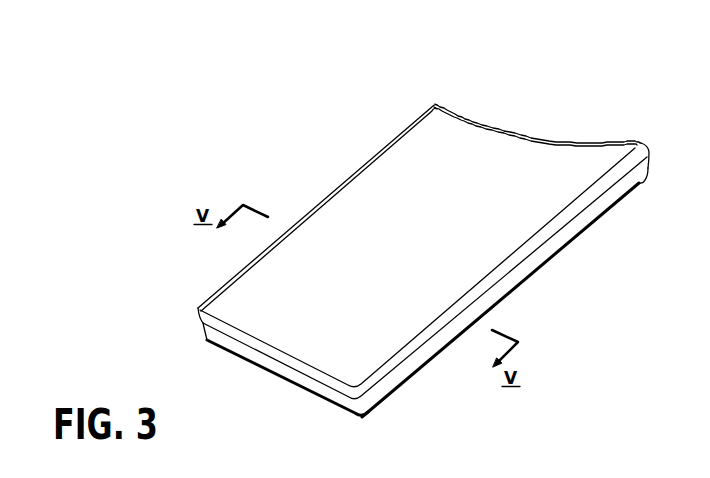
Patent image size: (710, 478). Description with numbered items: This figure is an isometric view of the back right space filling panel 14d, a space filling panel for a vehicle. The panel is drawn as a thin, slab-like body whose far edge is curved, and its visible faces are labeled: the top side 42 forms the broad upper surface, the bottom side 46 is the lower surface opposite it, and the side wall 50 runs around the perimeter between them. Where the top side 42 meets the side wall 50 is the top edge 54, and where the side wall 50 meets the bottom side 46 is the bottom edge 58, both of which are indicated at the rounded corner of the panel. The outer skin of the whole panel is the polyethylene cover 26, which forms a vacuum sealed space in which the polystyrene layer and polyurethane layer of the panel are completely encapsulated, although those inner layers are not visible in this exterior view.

The top side 42 is at (397, 177).
The back right space filling panel 14d is at (528, 122).
The top edge 54 is at (620, 167).
The bottom edge 58 is at (634, 189).
The polyethylene cover 26 is at (541, 213).
The bottom side 46 is at (545, 262).
The side wall 50 is at (512, 277).